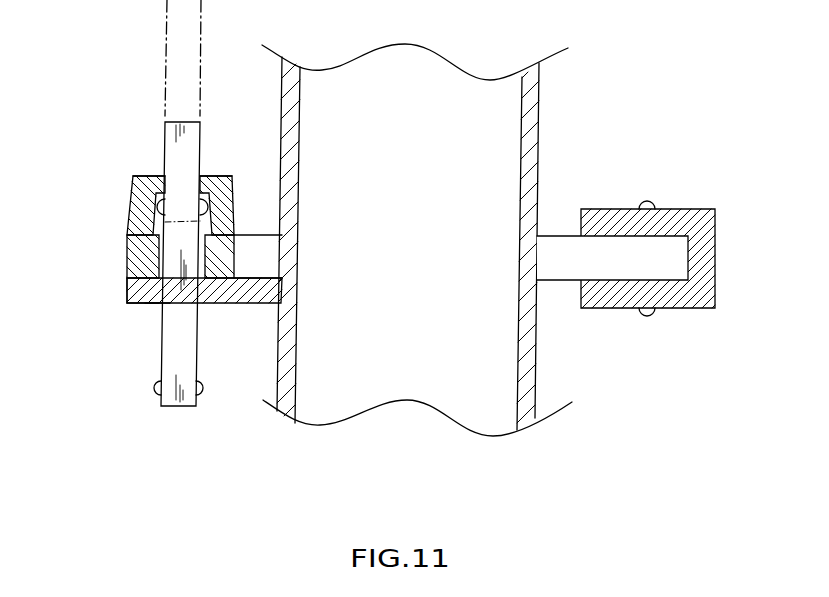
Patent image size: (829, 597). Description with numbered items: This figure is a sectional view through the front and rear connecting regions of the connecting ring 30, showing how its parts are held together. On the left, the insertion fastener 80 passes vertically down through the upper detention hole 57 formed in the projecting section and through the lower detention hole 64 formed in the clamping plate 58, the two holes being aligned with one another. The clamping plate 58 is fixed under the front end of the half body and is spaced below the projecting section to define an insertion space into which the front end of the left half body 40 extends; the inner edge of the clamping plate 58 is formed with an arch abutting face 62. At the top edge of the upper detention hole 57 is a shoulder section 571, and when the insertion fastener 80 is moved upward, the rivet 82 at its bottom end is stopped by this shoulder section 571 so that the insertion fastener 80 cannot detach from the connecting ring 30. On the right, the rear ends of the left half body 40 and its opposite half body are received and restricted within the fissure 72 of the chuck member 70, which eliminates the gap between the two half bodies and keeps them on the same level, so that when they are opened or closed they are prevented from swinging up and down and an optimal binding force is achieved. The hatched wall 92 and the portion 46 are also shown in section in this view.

The connecting ring 30 is at (669, 242).
The left half body 40 is at (161, 274).
The lower block portion 46 is at (140, 265).
The upper detention hole 57 is at (135, 179).
The shoulder section 571 is at (153, 176).
The clamping plate 58 is at (131, 303).
The abutting face 62 is at (185, 332).
The lower detention hole 64 is at (155, 303).
The chuck member 70 is at (715, 264).
The fissure 72 is at (670, 282).
The insertion fastener 80 is at (153, 105).
The rivet 82 is at (203, 390).
The tube wall 92 is at (550, 380).